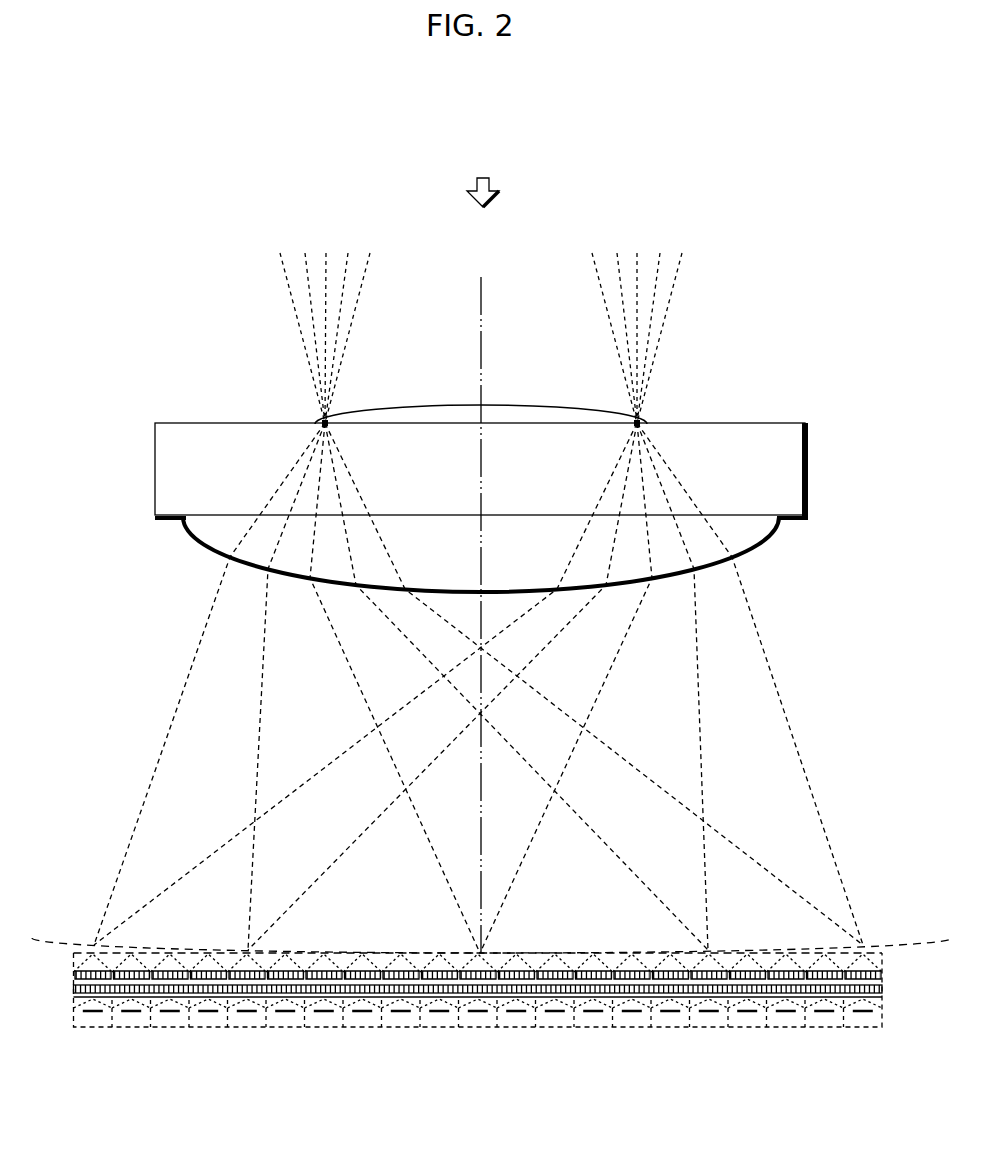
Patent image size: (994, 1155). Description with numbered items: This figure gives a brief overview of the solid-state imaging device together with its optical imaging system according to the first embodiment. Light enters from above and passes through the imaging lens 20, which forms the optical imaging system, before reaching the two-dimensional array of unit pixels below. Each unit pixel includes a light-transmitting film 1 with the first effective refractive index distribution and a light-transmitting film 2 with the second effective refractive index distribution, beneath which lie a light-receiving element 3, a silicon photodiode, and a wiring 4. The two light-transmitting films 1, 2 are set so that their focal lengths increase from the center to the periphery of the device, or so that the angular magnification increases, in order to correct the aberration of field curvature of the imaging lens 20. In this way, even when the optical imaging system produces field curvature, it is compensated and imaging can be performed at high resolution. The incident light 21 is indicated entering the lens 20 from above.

The light-transmitting film with the first effective refractive index distribution 1 is at (882, 975).
The light-transmitting film with the second effective refractive index distribution 2 is at (882, 993).
The light-receiving element 3 is at (862, 1013).
The wiring 4 is at (882, 1003).
The imaging lens 20 is at (784, 483).
The incident light 21 is at (481, 269).